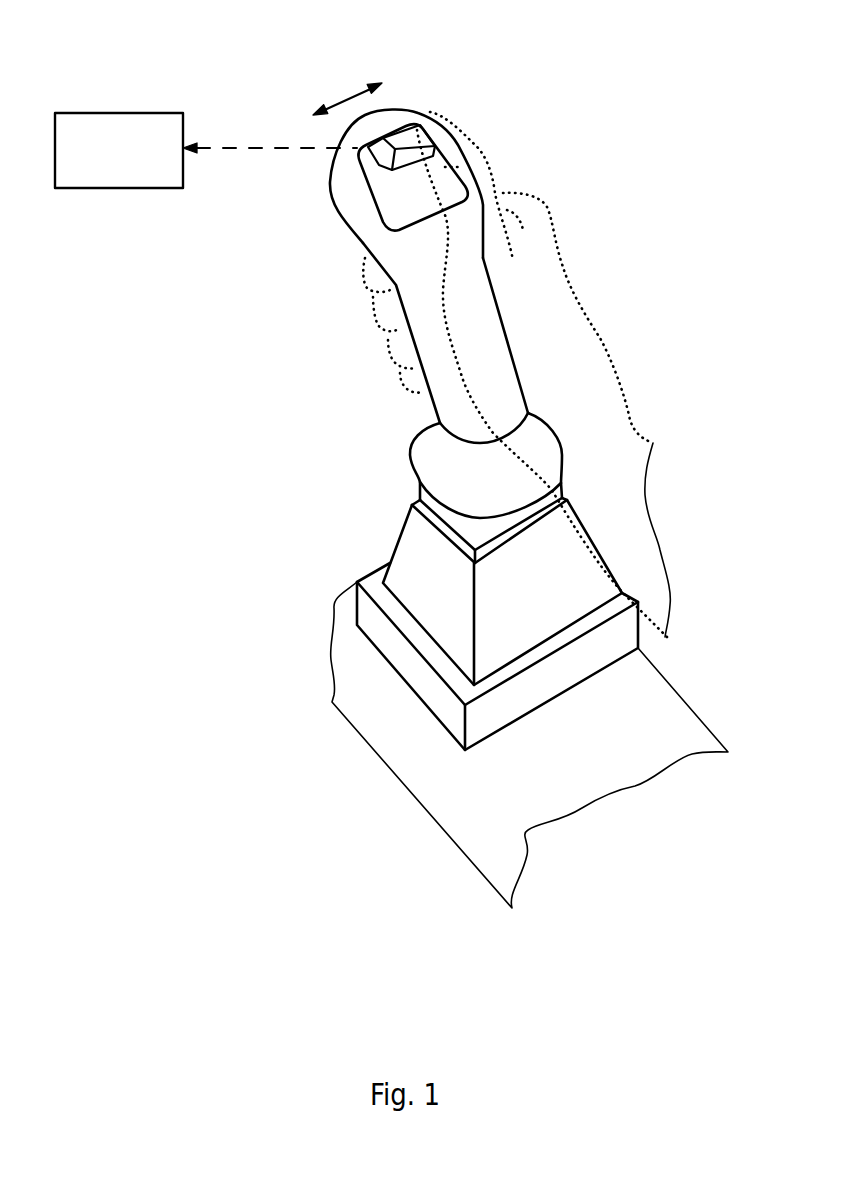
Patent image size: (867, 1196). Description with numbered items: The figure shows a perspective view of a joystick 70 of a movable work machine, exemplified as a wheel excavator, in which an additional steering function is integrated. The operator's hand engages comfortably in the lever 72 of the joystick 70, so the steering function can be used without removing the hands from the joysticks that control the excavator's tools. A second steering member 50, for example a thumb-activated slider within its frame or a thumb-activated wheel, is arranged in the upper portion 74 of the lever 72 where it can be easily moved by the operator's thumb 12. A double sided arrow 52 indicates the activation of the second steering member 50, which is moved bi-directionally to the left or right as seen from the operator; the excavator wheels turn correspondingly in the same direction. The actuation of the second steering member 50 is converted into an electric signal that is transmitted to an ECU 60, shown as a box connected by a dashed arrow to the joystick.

The thumb 12 is at (474, 144).
The second steering member 50 is at (398, 122).
The double sided arrow 52 is at (350, 88).
The ECU 60 is at (101, 162).
The joystick 70 is at (405, 282).
The lever 72 is at (421, 317).
The upper portion 74 is at (373, 212).